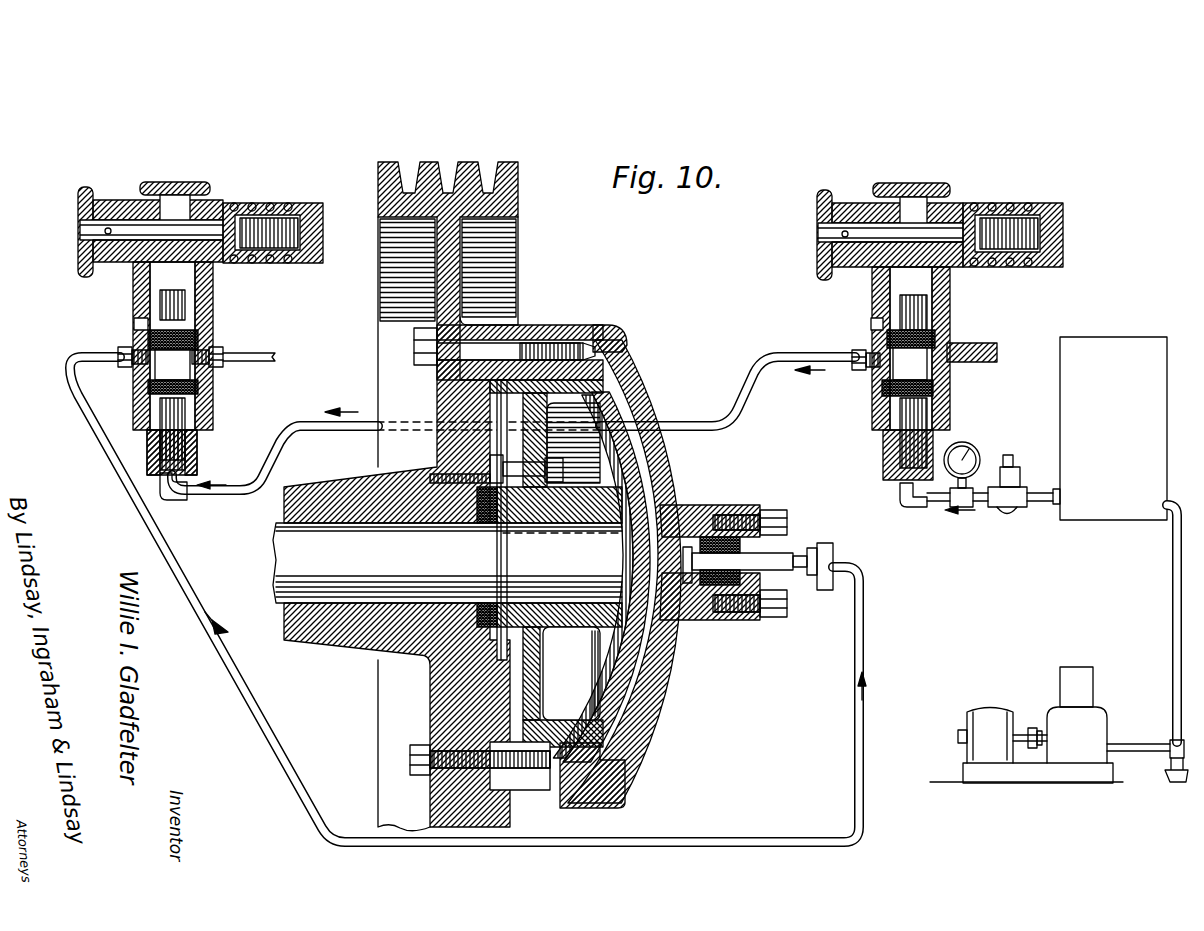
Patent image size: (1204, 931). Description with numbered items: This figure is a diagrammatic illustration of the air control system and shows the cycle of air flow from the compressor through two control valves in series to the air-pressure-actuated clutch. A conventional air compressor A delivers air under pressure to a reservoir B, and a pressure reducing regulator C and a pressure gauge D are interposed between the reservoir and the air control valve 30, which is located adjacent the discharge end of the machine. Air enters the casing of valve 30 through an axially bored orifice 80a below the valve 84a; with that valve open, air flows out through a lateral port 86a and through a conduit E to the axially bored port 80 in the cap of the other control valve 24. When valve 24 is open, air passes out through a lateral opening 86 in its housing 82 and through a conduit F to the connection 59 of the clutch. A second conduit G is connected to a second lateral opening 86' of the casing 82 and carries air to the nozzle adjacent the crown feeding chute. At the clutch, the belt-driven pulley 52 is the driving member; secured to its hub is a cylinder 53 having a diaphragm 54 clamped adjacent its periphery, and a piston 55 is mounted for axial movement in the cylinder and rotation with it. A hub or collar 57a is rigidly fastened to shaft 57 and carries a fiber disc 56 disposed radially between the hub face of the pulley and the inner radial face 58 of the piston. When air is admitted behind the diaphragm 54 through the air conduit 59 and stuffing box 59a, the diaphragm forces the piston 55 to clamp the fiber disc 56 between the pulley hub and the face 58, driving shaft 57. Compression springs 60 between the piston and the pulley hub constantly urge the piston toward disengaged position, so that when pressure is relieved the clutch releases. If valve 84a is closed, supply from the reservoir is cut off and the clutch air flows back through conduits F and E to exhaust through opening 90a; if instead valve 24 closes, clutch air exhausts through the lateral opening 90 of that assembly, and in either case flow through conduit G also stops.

The air control valve 24 is at (213, 291).
The lateral opening 90 is at (137, 320).
The lateral port 86 is at (117, 347).
The second lateral opening 86' is at (217, 341).
The valve housing 82 is at (208, 381).
The axially bored port 80 is at (198, 470).
The conduit G is at (255, 362).
The pulley 52 is at (512, 327).
The cylinder 53 is at (607, 330).
The conduit E is at (719, 400).
The shaft 57 is at (676, 482).
The hub or collar 57a is at (590, 520).
The inner radial face 58 is at (522, 702).
The fiber disc 56 is at (510, 718).
The piston 55 is at (630, 713).
The diaphragm 54 is at (642, 729).
The compression springs 60 is at (528, 770).
The air conduit 59 is at (786, 567).
The stuffing box 59a is at (730, 622).
The exhaust opening 90a is at (872, 324).
The lateral port 86a is at (870, 371).
The valve 84a is at (878, 398).
The axially bored orifice 80a is at (890, 482).
The air control valve 30 is at (958, 336).
The pressure gauge D is at (964, 445).
The pressure reducing regulator C is at (1012, 478).
The reservoir B is at (1118, 539).
The air compressor A is at (1059, 725).
The conduit F is at (184, 583).